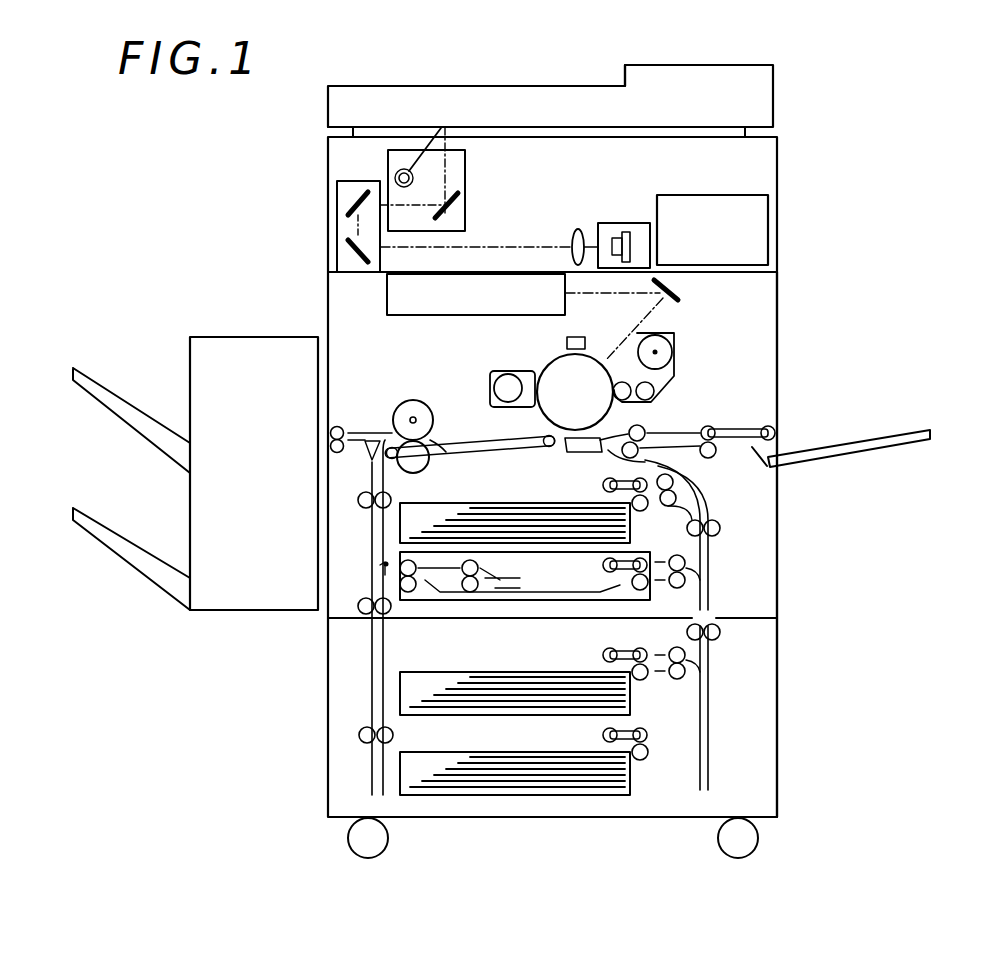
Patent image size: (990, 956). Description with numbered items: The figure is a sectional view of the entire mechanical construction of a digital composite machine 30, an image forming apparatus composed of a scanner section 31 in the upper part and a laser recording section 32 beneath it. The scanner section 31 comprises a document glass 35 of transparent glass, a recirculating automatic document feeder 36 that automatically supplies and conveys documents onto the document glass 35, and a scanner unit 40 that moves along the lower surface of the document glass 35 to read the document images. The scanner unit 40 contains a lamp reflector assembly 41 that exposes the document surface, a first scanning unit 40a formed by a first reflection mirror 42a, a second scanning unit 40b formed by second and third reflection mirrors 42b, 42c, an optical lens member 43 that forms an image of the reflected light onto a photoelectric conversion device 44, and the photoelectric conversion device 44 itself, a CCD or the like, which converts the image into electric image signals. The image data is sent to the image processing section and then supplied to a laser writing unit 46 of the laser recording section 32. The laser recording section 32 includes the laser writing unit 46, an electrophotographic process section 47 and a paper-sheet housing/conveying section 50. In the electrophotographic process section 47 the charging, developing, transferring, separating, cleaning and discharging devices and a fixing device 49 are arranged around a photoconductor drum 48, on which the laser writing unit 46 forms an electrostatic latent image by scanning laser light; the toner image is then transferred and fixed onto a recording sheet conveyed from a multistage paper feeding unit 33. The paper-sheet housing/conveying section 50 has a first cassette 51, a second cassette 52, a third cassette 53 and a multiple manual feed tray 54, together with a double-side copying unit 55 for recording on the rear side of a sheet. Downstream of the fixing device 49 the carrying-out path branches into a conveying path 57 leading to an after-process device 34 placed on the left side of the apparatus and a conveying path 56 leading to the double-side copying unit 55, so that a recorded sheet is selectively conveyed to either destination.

The digital composite machine 30 is at (878, 240).
The scanner section 31 is at (777, 205).
The laser recording section 32 is at (777, 358).
The multistage paper feeding unit 33 is at (665, 430).
The after-process device 34 is at (215, 337).
The document glass 35 is at (533, 118).
The recirculating automatic document feeder 36 is at (585, 102).
The scanner unit 40 is at (354, 159).
The first scanning unit 40a is at (466, 215).
The second scanning unit 40b is at (400, 260).
The lamp reflector assembly 41 is at (466, 160).
The first reflection mirror 42a is at (466, 190).
The second reflection mirror 42b is at (337, 212).
The third reflection mirror 42c is at (337, 262).
The optical lens member 43 is at (578, 228).
The photoelectric conversion device 44 is at (622, 222).
The laser writing unit 46 is at (463, 316).
The electrophotographic process section 47 is at (727, 323).
The photoconductor drum 48 is at (548, 372).
The fixing device 49 is at (432, 410).
The paper-sheet housing/conveying section 50 is at (764, 590).
The first cassette 51 is at (460, 503).
The second cassette 52 is at (480, 672).
The third cassette 53 is at (480, 754).
The multiple manual feed tray 54 is at (843, 448).
The double-side copying unit 55 is at (478, 600).
The conveying path 56 is at (372, 462).
The conveying path 57 is at (330, 433).